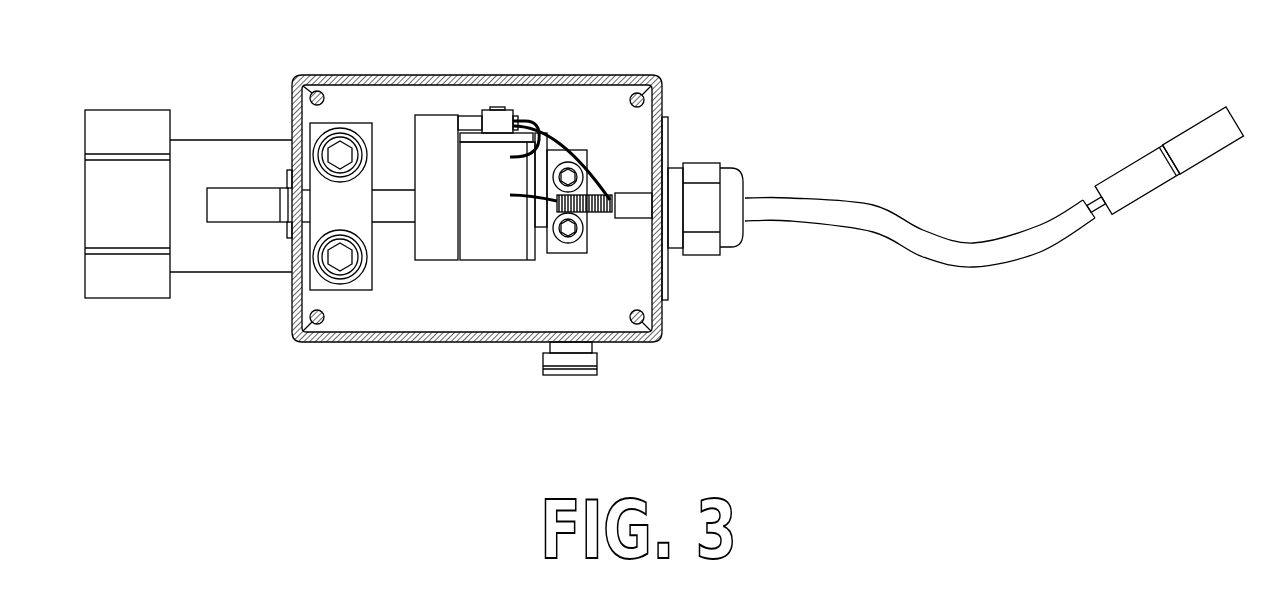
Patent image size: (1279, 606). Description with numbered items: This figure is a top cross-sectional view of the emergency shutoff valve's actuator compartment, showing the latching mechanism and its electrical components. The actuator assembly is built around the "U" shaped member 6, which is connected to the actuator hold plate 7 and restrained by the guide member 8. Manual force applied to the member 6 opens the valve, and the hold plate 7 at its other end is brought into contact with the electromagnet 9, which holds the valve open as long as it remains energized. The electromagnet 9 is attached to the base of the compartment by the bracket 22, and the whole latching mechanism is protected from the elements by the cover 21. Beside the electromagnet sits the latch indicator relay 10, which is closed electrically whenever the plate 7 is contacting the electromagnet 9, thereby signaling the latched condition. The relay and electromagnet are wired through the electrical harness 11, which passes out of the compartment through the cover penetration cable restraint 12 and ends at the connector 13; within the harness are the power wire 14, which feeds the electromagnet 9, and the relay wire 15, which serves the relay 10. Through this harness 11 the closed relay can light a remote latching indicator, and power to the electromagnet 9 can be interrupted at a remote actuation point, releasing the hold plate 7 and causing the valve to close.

The "U" shaped member 6 is at (215, 203).
The actuator hold plate 7 is at (433, 252).
The guide member 8 is at (347, 217).
The electromagnet 9 is at (491, 250).
The latch indicator relay 10 is at (493, 120).
The electrical harness 11 is at (885, 196).
The cover penetration cable restraint 12 is at (703, 170).
The connector 13 is at (1147, 185).
The power wire 14 is at (605, 213).
The relay wire 15 is at (560, 168).
The cover 21 is at (615, 77).
The bracket 22 is at (555, 248).